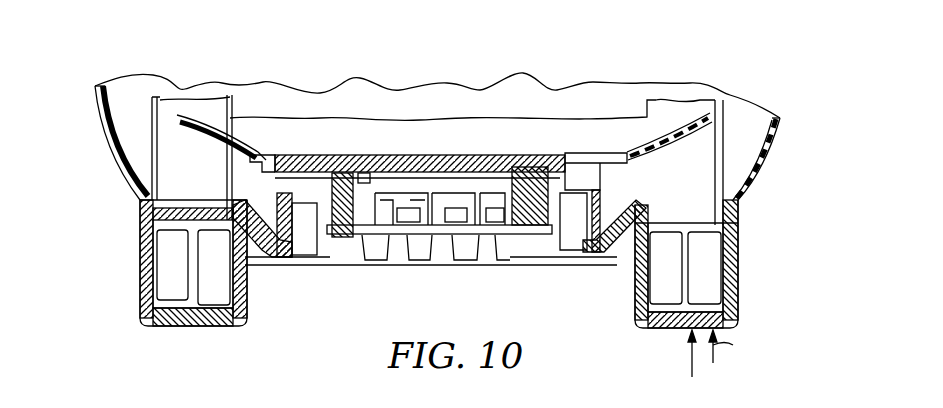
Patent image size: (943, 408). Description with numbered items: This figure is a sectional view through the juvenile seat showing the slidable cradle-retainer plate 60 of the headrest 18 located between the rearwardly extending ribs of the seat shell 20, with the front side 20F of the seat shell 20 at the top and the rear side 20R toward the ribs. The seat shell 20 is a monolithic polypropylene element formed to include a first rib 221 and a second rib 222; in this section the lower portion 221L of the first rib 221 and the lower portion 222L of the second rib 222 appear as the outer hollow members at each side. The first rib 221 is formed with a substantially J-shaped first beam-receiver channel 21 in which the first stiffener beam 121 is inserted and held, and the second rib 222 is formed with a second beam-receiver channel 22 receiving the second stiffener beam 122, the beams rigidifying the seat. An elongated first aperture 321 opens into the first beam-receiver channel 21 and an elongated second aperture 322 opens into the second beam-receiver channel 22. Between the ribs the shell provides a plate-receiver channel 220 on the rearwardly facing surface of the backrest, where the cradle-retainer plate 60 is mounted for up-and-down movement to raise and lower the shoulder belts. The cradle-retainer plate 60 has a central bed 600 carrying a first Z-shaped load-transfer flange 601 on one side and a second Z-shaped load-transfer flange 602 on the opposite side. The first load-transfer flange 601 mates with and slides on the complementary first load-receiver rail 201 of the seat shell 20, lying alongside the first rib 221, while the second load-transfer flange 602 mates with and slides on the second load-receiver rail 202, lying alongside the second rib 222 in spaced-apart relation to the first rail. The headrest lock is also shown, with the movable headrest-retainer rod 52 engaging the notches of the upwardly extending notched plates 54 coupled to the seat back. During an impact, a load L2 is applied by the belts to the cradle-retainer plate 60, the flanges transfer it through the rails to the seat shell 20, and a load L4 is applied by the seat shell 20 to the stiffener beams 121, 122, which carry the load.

The seat shell 20 is at (95, 110).
The front side of seat shell 20F is at (132, 100).
The rear side of seat shell 20R is at (105, 152).
The headrest 18 is at (236, 136).
The second load-receiver rail 202 is at (262, 202).
The first load-receiver rail 201 is at (618, 197).
The central bed 600 is at (472, 188).
The notched plate 54 is at (402, 192).
The headrest-retainer rod 52 is at (486, 235).
The plate-receiver channel 220 is at (398, 276).
The slidable cradle-retainer plate 60 is at (297, 256).
The second Z-shaped load-transfer flange 602 is at (263, 256).
The first Z-shaped load-transfer flange 601 is at (615, 256).
The second aperture 322 is at (240, 190).
The first aperture 321 is at (640, 210).
The second beam-receiver channel 22 is at (172, 214).
The second rib 222 is at (167, 330).
The lower portion of second rib 222L is at (137, 248).
The second stiffener beam 122 is at (182, 285).
The first beam-receiver channel 21 is at (703, 217).
The first rib 221 is at (647, 337).
The first stiffener beam 121 is at (732, 259).
The lower portion of first rib 221L is at (743, 288).
The load L2 is at (692, 365).
The load L4 is at (733, 352).